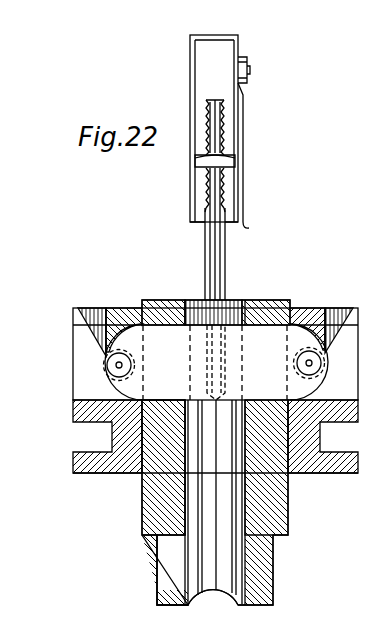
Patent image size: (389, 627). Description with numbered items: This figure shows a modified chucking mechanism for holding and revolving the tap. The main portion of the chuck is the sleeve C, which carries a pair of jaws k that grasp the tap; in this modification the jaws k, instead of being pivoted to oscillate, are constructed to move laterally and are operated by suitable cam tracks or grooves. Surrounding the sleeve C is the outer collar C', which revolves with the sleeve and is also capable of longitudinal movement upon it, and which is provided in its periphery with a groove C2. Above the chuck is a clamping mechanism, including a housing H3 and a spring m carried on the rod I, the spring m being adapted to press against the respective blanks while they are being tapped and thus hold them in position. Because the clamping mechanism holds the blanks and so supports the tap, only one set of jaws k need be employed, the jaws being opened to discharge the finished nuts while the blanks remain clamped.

The housing / spindle casing H3 is at (220, 131).
The spring m is at (237, 162).
The spindle rod I is at (222, 259).
The outer collar C' is at (196, 350).
The groove C2 is at (209, 436).
The chuck sleeve C is at (215, 452).
The jaws k is at (214, 362).